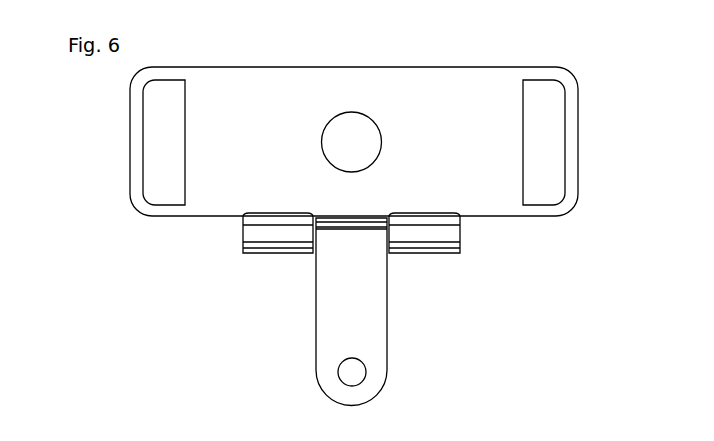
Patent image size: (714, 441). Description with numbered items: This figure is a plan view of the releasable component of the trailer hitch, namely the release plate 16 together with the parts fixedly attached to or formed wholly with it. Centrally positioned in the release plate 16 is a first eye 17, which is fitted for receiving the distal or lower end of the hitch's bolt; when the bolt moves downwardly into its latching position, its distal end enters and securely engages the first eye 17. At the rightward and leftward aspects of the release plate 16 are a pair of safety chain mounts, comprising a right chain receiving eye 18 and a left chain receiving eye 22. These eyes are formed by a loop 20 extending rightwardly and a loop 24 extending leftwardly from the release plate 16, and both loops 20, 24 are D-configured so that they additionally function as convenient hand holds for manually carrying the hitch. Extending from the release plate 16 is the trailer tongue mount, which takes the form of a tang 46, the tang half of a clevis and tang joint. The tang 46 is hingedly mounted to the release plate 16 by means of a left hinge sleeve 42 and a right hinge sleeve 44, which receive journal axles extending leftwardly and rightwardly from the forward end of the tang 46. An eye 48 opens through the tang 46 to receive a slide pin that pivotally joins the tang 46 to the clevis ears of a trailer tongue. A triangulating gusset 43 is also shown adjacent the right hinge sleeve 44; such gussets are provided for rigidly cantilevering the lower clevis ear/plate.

The release plate 16 is at (240, 155).
The first eye 17 is at (358, 137).
The right chain receiving eye 18 is at (550, 167).
The loop 20 is at (568, 87).
The left chain receiving eye 22 is at (167, 180).
The loop 24 is at (133, 144).
The left hinge sleeve 42 is at (270, 243).
The triangulating gusset 43 is at (438, 217).
The right hinge sleeve 44 is at (415, 245).
The tang 46 is at (342, 303).
The eye 48 is at (352, 371).